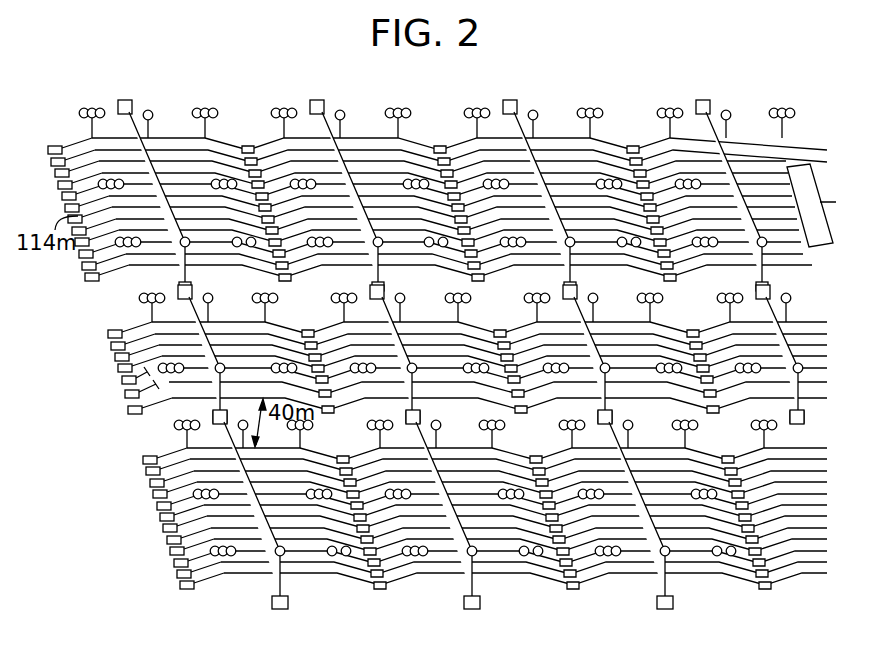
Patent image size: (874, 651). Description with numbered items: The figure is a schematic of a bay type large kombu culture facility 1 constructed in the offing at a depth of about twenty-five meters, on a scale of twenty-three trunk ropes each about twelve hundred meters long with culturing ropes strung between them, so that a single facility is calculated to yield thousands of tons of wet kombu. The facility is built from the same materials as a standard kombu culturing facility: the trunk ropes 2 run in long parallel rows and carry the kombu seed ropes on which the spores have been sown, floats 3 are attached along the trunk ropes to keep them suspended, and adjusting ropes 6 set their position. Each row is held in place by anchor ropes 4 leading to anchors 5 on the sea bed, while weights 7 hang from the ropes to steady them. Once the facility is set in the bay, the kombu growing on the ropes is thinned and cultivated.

The large kombu culture facility 1 is at (438, 150).
The trunk rope 2 is at (548, 140).
The float 3 is at (386, 108).
The anchor rope 4 is at (111, 283).
The anchor 5 is at (122, 379).
The adjusting rope 6 is at (729, 321).
The weight 7 is at (484, 601).